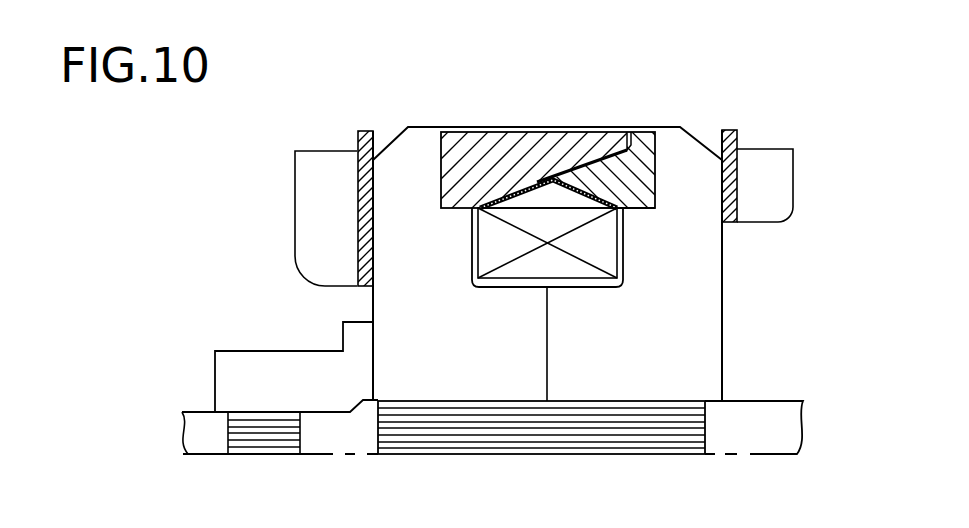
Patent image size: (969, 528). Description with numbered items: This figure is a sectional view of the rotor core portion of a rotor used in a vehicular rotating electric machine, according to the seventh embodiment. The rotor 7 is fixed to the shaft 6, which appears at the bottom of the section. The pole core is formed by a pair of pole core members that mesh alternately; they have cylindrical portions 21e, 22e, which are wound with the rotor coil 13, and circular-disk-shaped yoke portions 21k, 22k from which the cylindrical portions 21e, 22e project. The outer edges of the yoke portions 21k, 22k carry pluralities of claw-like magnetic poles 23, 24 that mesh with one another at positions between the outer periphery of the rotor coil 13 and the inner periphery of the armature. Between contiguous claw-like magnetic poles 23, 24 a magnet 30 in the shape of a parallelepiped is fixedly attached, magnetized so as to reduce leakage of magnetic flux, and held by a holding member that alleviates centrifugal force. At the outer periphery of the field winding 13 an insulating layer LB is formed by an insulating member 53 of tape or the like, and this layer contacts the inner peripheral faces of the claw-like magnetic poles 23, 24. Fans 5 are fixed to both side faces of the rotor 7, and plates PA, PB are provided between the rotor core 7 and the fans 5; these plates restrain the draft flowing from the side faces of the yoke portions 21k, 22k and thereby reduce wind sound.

The fans 5 is at (307, 169).
The shaft 6 is at (775, 401).
The rotor 7 is at (423, 127).
The rotor coil 13 is at (608, 248).
The yoke portion 21k is at (393, 307).
The yoke portion 22k is at (707, 313).
The cylindrical portion 21e is at (467, 380).
The cylindrical portion 22e is at (625, 377).
The claw-like magnetic poles 23 is at (592, 152).
The claw-like magnetic poles 24 is at (527, 165).
The magnet 30 is at (548, 157).
The insulating member 53 is at (650, 205).
The insulating layer LB is at (478, 203).
The plate PA is at (357, 131).
The plate PB is at (739, 132).